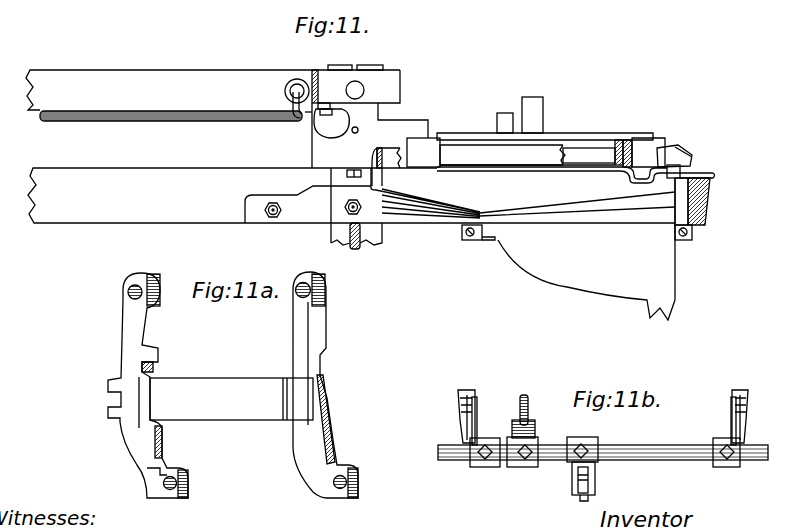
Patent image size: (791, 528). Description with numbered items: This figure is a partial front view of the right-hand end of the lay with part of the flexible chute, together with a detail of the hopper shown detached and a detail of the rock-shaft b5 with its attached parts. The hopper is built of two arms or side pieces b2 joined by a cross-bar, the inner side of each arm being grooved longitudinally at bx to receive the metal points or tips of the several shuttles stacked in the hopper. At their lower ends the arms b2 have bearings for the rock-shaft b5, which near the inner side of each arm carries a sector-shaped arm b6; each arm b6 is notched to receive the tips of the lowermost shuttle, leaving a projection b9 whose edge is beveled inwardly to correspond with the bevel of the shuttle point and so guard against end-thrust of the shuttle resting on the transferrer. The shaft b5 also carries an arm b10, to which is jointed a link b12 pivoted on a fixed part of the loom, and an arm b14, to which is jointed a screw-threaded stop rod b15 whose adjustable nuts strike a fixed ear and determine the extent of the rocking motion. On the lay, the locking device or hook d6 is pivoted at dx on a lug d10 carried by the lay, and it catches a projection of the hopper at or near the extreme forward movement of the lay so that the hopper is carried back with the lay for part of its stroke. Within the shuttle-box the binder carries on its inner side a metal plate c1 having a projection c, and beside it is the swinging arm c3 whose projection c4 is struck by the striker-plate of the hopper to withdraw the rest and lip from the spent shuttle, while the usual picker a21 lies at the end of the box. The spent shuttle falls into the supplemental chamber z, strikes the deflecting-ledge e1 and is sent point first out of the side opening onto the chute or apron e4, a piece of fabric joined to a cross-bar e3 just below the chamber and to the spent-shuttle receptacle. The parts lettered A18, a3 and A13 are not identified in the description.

In FIG. 11, the pivot dx is at (329, 103).
In FIG. 11, the locking device or hook d6 is at (316, 112).
In FIG. 11, the lug d10 is at (336, 123).
In FIG. 11, the lower frame bar A18 is at (201, 207).
In FIG. 11, the block a3 is at (406, 162).
In FIG. 11, the swinging arm c3 is at (551, 141).
In FIG. 11, the metal plate c1 is at (530, 158).
In FIG. 11, the projection c is at (542, 108).
In FIG. 11, the projection c4 is at (500, 113).
In FIG. 11, the picker a21 is at (683, 148).
In FIG. 11, the supplemental chamber z is at (577, 201).
In FIG. 11, the deflecting-ledge e1 is at (440, 216).
In FIG. 11, the cross-bar e3 is at (486, 240).
In FIG. 11, the chute or apron e4 is at (672, 273).
In FIG. 11, the frame piece A13 is at (596, 254).
In FIG. 11a, the arms or side pieces b2 is at (113, 440).
In FIG. 11a, the longitudinal groove bx is at (307, 332).
In FIG. 11a, the rock-shaft b5 is at (231, 399).
In FIG. 11b, the rock-shaft b5 is at (603, 442).
In FIG. 11b, the projection b9 is at (603, 408).
In FIG. 11b, the arms b6 is at (477, 431).
In FIG. 11b, the arm b14 is at (535, 429).
In FIG. 11b, the rod b15 is at (528, 408).
In FIG. 11b, the arm b10 is at (595, 478).
In FIG. 11b, the link b12 is at (588, 501).